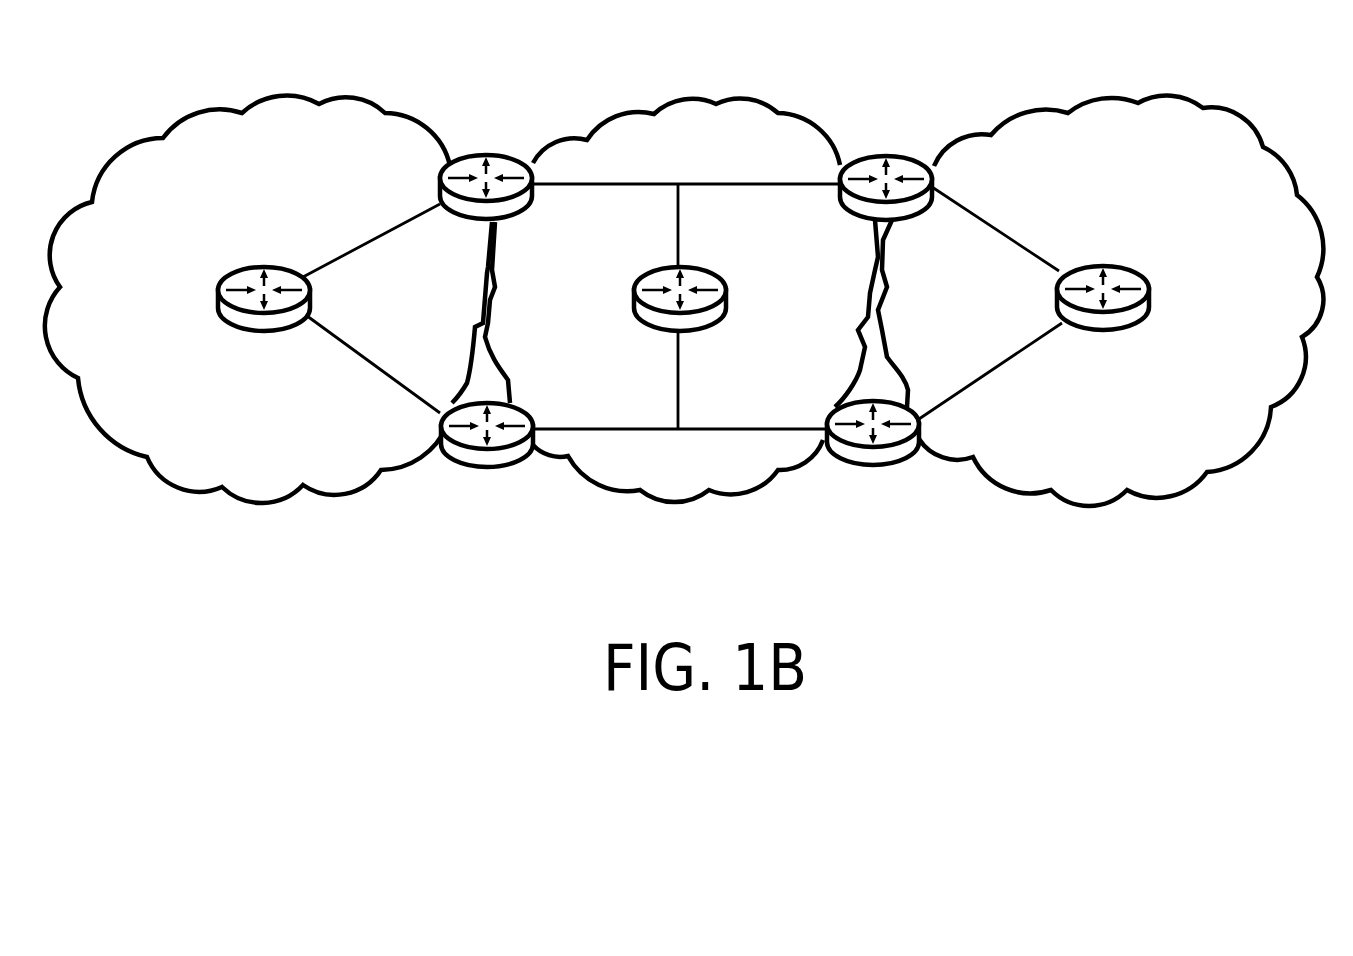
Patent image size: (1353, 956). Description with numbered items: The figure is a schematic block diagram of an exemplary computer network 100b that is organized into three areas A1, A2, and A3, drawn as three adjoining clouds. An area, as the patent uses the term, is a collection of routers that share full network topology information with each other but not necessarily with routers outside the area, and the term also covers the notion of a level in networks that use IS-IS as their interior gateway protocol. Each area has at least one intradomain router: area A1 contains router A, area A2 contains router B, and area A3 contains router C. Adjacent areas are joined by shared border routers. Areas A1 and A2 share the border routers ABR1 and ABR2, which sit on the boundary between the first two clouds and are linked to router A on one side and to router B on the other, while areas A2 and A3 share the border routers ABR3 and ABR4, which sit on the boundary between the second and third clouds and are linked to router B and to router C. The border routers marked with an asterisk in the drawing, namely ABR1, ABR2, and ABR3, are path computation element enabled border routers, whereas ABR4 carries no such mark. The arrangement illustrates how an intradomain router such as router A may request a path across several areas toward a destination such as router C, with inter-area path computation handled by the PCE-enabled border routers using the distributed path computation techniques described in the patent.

The computer network 100b is at (684, 407).
The intradomain router A is at (236, 309).
The intradomain router B is at (708, 299).
The intradomain router C is at (1129, 299).
The border router ABR1 is at (500, 147).
The border router ABR2 is at (460, 469).
The border router ABR3 is at (912, 147).
The border router ABR4 is at (885, 467).
The area A1 is at (268, 300).
The area A2 is at (681, 301).
The area A3 is at (1100, 300).